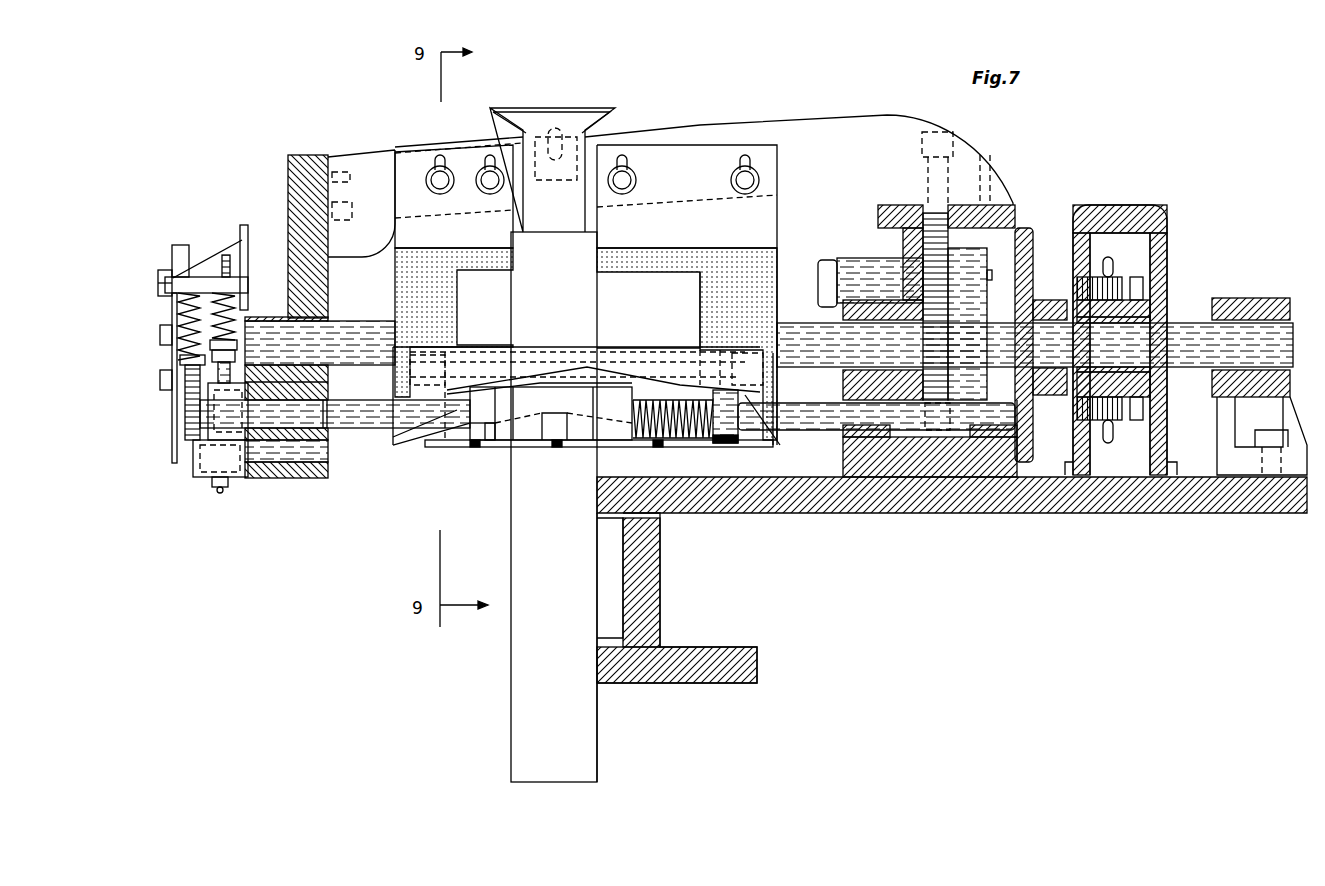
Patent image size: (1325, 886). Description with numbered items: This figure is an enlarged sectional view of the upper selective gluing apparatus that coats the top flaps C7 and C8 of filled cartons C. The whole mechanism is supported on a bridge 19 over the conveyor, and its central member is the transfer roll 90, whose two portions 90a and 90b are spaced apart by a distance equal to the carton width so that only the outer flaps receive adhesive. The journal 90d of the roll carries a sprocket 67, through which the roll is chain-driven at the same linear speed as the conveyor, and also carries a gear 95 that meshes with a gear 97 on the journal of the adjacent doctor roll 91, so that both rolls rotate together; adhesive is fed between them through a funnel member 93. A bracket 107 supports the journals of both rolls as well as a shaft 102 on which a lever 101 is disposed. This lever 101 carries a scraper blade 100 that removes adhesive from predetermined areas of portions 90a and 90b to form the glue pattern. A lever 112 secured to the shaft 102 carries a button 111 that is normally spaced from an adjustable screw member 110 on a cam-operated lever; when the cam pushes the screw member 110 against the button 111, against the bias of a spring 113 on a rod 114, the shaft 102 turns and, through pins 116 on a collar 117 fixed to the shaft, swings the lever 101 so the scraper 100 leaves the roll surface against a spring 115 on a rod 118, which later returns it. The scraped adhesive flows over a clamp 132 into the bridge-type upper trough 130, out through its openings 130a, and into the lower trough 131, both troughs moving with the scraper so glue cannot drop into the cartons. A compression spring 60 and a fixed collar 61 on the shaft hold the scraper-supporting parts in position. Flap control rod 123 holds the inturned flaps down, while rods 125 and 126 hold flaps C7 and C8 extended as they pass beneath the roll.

The bridge 19 is at (880, 508).
The compression spring 60 is at (716, 435).
The collar 61 is at (728, 432).
The sprocket 67 is at (1108, 264).
The transfer roll 90 is at (565, 276).
The portion of transfer roll 90a is at (405, 292).
The portion of transfer roll 90b is at (775, 267).
The journal 90d is at (1175, 323).
The doctor roll 91 is at (827, 263).
The funnel member 93 is at (600, 108).
The gear 95 is at (982, 395).
The gear 97 is at (925, 218).
The scraper blade 100 is at (653, 352).
The lever 101 is at (620, 440).
The shaft 102 is at (377, 430).
The bracket 107 is at (290, 478).
The adjustable screw member 110 is at (222, 492).
The button 111 is at (200, 448).
The lever 112 is at (208, 410).
The spring 113 is at (180, 318).
The rod 114 is at (185, 395).
The spring 115 is at (233, 300).
The pins 116 is at (493, 380).
The collar 117 is at (488, 441).
The rod 118 is at (223, 262).
The flap control rod 123 is at (558, 447).
The flap control rod 125 is at (480, 447).
The flap control rod 126 is at (660, 440).
The upper trough 130 is at (753, 350).
The openings 130a is at (440, 438).
The lower trough 131 is at (410, 447).
The clamp 132 is at (720, 340).
The cartons C is at (520, 605).
The top flap C7 is at (616, 465).
The top flap C8 is at (438, 447).